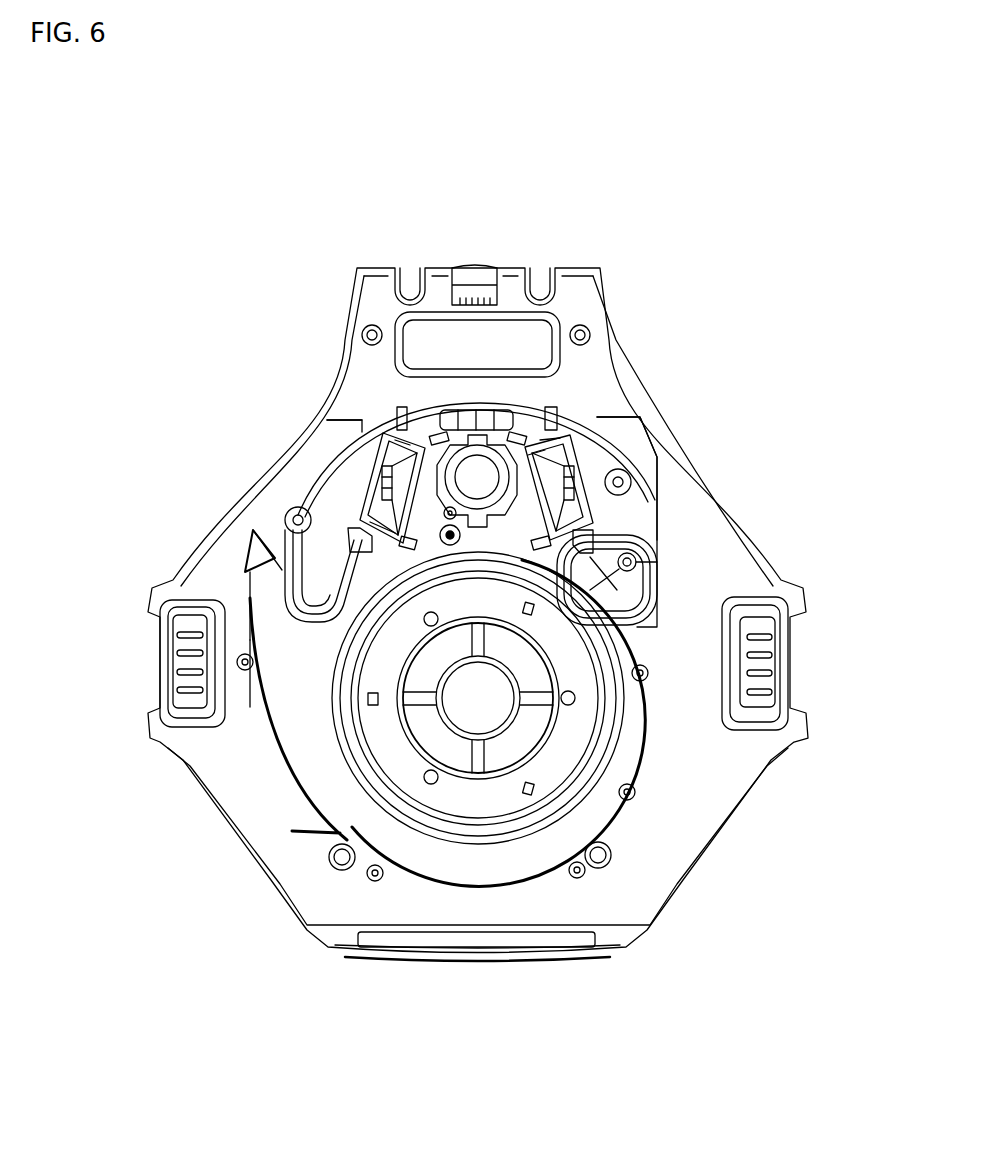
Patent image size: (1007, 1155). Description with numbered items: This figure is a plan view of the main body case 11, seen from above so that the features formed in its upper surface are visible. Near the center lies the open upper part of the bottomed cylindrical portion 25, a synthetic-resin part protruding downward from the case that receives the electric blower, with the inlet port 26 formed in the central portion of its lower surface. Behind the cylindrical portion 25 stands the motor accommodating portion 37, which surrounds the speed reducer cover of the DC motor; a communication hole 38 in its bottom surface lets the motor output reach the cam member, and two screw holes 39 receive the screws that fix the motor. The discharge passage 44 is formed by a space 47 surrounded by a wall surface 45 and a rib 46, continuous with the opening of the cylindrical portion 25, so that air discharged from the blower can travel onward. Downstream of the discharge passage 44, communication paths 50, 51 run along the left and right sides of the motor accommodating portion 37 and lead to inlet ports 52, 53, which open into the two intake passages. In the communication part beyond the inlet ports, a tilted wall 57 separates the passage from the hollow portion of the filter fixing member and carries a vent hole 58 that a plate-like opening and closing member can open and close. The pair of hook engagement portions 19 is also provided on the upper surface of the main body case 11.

The main body case 11 is at (705, 180).
The hook engagement portion 19 is at (183, 663).
The cylindrical portion 25 is at (452, 810).
The inlet port 26 is at (482, 712).
The motor accommodating portion 37 is at (480, 437).
The communication hole 38 is at (470, 465).
The screw hole 39 is at (545, 425).
The discharge passage 44 is at (316, 785).
The wall surface 45 is at (238, 600).
The rib 46 is at (303, 627).
The space 47 is at (198, 792).
The communication path 50 is at (330, 547).
The communication path 51 is at (623, 517).
The inlet port 52 is at (330, 470).
The inlet port 53 is at (655, 490).
The tilted wall 57 is at (608, 500).
The vent hole 58 is at (597, 530).